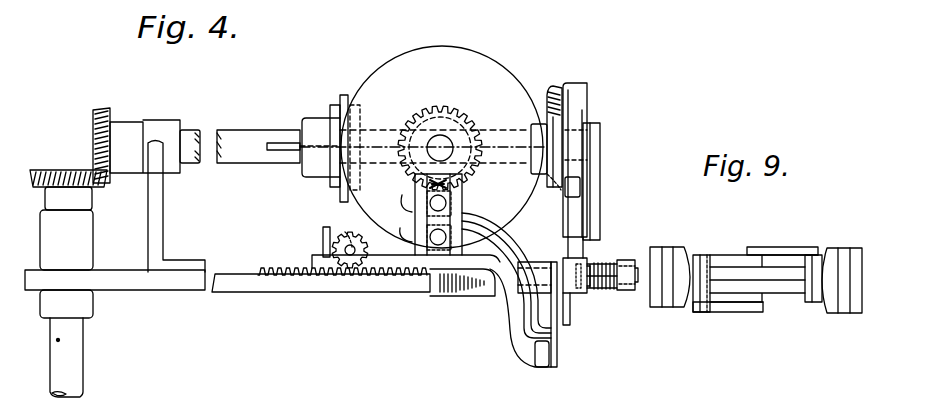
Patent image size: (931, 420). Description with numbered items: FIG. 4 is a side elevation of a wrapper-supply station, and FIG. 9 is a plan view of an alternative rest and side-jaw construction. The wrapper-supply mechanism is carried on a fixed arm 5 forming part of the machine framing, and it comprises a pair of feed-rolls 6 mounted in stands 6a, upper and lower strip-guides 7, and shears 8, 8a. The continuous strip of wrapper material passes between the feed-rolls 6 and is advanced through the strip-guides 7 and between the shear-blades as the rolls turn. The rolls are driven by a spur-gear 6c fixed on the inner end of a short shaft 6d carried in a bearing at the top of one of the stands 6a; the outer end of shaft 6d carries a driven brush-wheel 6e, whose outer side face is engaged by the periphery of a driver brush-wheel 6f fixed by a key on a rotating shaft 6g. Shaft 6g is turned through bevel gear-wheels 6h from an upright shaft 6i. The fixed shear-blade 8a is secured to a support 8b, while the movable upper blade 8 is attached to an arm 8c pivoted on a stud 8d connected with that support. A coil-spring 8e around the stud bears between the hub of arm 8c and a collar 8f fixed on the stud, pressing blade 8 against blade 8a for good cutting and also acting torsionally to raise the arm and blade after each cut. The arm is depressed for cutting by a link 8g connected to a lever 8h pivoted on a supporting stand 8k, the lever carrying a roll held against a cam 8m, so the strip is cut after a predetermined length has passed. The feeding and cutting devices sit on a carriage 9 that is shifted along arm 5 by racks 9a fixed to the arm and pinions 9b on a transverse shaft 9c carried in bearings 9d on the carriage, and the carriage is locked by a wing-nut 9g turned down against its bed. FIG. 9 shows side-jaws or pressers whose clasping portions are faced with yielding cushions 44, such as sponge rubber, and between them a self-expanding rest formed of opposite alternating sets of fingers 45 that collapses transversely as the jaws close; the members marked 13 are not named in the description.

In FIG. 4, the fixed arm 5 is at (115, 270).
In FIG. 4, the feed-rolls 6 is at (462, 195).
In FIG. 4, the stands 6a is at (415, 196).
In FIG. 4, the spur-gear 6c is at (435, 108).
In FIG. 4, the short shaft 6d is at (447, 142).
In FIG. 4, the driven brush-wheel 6e is at (390, 60).
In FIG. 4, the driver brush-wheel 6f is at (345, 95).
In FIG. 4, the rotating shaft 6g is at (188, 130).
In FIG. 4, the bevel gear-wheels 6h is at (58, 170).
In FIG. 4, the upright shaft 6i is at (83, 363).
In FIG. 4, the strip-guides 7 is at (275, 143).
In FIG. 4, the movable upper shear-blade 8 is at (566, 322).
In FIG. 4, the fixed shear-blade 8a is at (550, 357).
In FIG. 4, the support 8b is at (508, 332).
In FIG. 4, the arm 8c is at (575, 293).
In FIG. 4, the stud 8d is at (636, 290).
In FIG. 4, the coil-spring 8e is at (600, 263).
In FIG. 4, the collar 8f is at (625, 260).
In FIG. 4, the link 8g is at (572, 188).
In FIG. 4, the lever 8h is at (549, 95).
In FIG. 4, the supporting stand 8k is at (580, 87).
In FIG. 4, the cam 8m is at (560, 190).
In FIG. 4, the carriage 9 is at (420, 262).
In FIG. 4, the racks 9a is at (278, 268).
In FIG. 4, the pinions 9b is at (345, 232).
In FIG. 4, the shaft 9c is at (348, 254).
In FIG. 4, the bearings 9d is at (356, 254).
In FIG. 4, the wing-nut 9g is at (323, 240).
In FIG. 9, the end heads 13 is at (852, 248).
In FIG. 9, the yielding cushions 44 is at (700, 255).
In FIG. 9, the fingers 45 is at (758, 247).